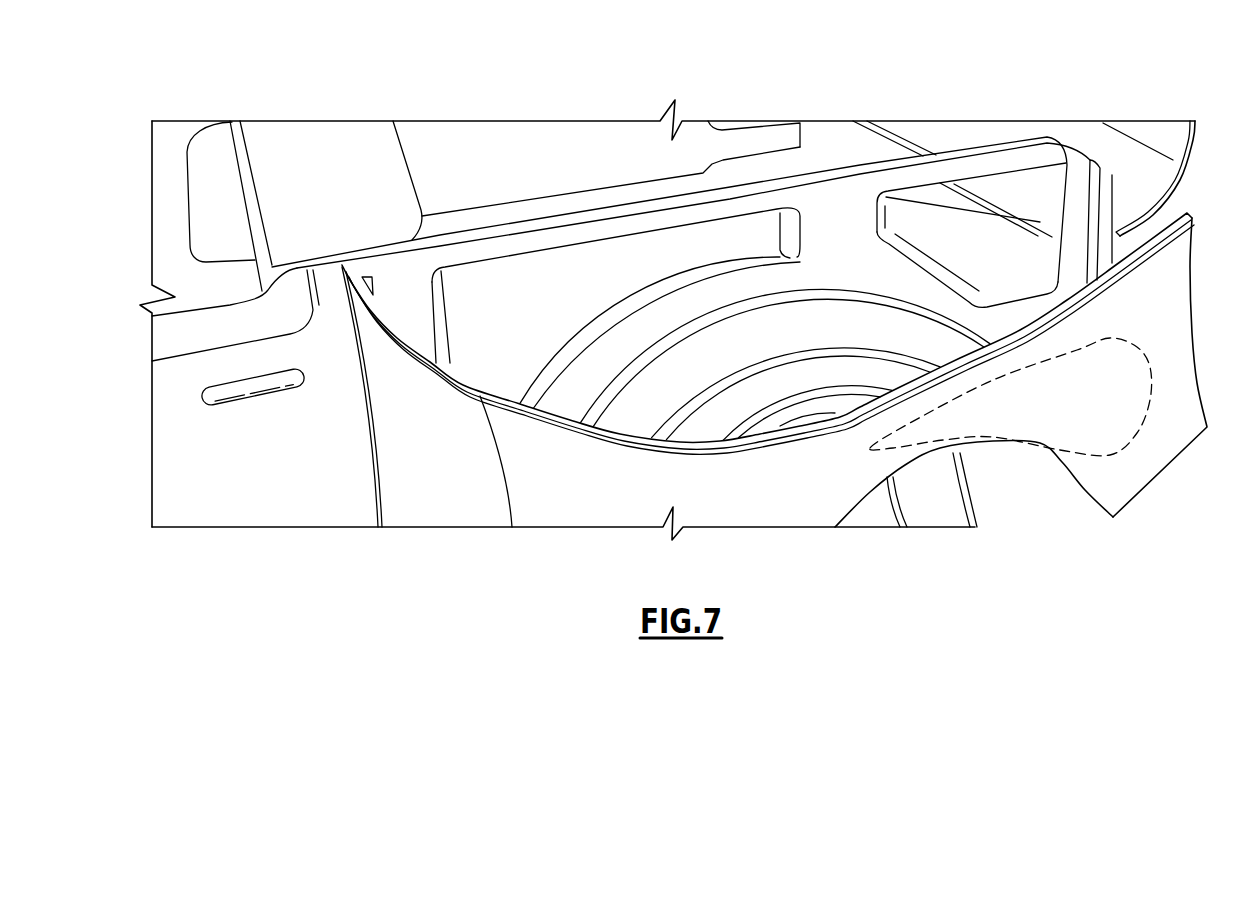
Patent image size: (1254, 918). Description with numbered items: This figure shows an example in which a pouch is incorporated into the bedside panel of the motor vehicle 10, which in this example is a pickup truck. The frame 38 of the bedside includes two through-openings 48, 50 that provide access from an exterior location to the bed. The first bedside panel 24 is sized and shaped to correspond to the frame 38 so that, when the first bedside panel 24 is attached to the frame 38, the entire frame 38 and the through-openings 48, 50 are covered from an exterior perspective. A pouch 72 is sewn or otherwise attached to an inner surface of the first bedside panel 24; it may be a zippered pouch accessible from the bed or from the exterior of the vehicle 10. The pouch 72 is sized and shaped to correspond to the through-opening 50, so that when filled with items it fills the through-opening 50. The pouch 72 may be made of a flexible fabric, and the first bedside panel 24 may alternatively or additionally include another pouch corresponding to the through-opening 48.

The motor vehicle 10 is at (197, 550).
The first bedside panel 24 is at (1162, 498).
The frame 38 is at (820, 176).
The through-opening 48 is at (569, 309).
The through-opening 50 is at (1017, 237).
The pouch 72 is at (1110, 400).